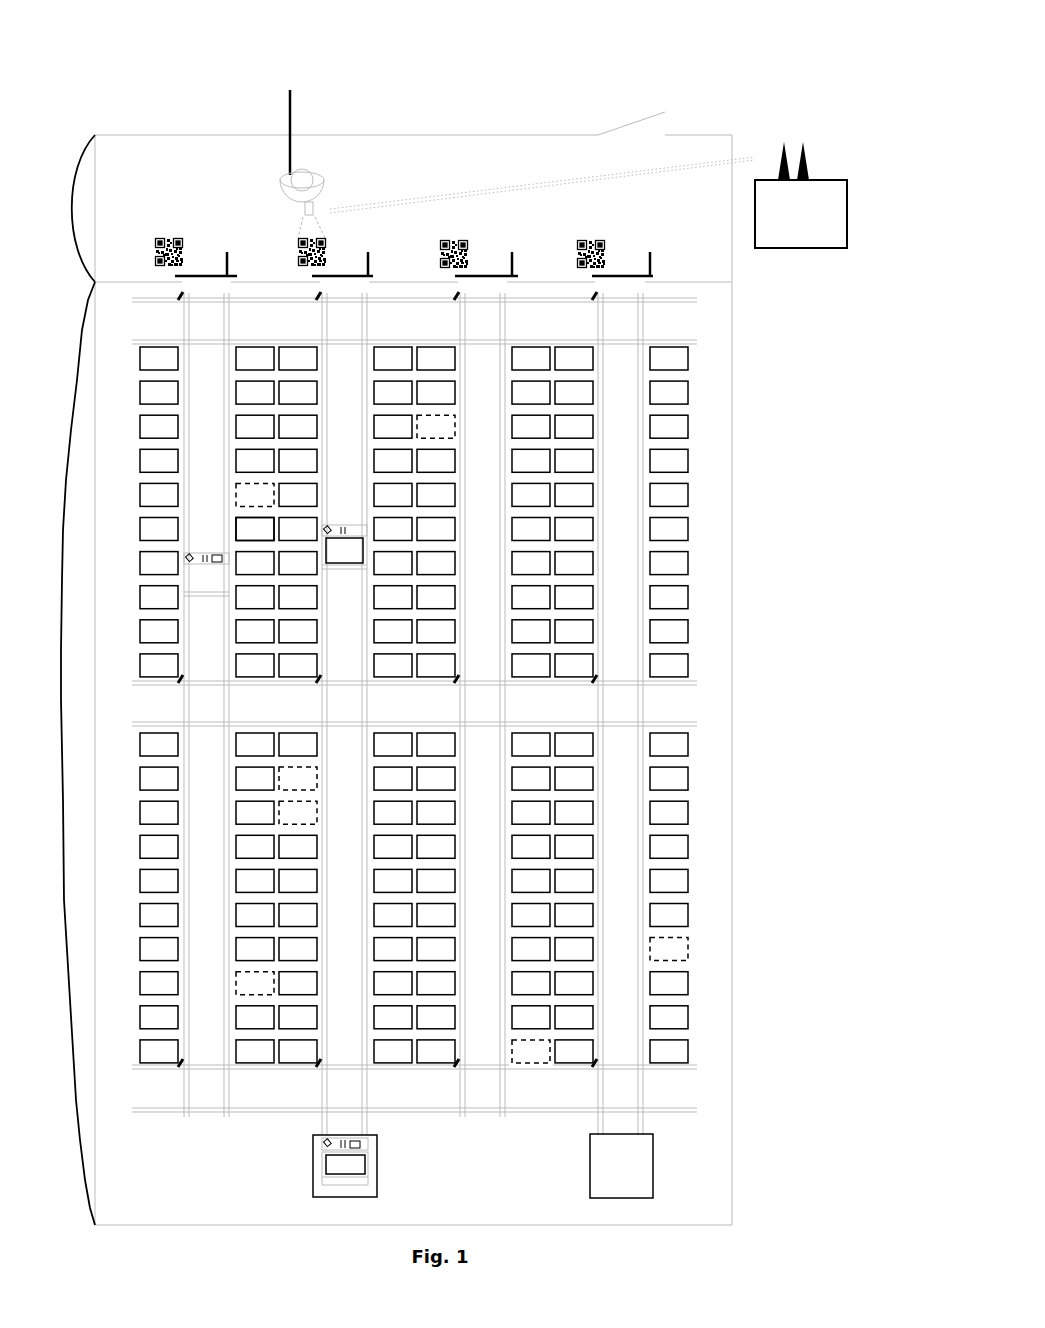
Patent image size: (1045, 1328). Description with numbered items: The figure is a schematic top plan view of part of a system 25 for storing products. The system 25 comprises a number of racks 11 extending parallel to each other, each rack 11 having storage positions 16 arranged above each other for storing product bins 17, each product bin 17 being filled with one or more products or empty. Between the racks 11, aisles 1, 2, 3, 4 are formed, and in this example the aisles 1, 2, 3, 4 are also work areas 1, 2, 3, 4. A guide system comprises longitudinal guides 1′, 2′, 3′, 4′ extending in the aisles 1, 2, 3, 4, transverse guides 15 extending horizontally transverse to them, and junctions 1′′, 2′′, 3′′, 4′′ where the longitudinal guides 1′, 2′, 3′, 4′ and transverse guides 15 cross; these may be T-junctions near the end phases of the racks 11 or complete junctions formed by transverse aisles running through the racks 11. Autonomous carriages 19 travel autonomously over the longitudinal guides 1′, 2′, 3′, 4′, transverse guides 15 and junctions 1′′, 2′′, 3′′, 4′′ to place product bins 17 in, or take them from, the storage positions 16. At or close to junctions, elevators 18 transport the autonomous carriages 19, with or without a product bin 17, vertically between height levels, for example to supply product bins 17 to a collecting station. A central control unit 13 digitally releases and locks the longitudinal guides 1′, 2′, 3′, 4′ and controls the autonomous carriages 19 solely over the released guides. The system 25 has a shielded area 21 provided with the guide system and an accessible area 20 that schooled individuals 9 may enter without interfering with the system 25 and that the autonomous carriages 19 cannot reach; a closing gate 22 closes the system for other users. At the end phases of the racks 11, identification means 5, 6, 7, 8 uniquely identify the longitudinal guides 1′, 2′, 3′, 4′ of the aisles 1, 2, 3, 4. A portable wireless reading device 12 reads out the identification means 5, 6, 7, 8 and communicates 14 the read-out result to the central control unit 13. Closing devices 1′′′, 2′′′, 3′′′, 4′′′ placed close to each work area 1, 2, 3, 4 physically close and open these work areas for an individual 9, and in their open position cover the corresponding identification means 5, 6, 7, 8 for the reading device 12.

The aisle 1 is at (203, 704).
The aisle 2 is at (341, 713).
The aisle 3 is at (479, 704).
The aisle 4 is at (617, 713).
The longitudinal guide 1′ is at (206, 406).
The longitudinal guide 2′ is at (344, 406).
The longitudinal guide 3′ is at (482, 406).
The longitudinal guide 4′ is at (620, 406).
The junction 1′′ is at (212, 323).
The junction 2′′ is at (350, 323).
The junction 3′′ is at (488, 323).
The junction 4′′ is at (626, 323).
The closing device 1′′′ is at (213, 253).
The closing device 2′′′ is at (346, 253).
The closing device 3′′′ is at (496, 253).
The closing device 4′′′ is at (632, 253).
The identification means 5 is at (180, 250).
The identification means 6 is at (322, 250).
The identification means 7 is at (465, 245).
The identification means 8 is at (601, 250).
The individual 9 is at (302, 136).
The rack 11 is at (420, 1117).
The portable wireless reading device 12 is at (305, 212).
The central control unit 13 is at (803, 248).
The communicating 14 is at (547, 185).
The transverse guide 15 is at (404, 705).
The storage position 16 is at (241, 497).
The product bin 17 is at (252, 532).
The elevator 18 is at (353, 1193).
The autonomous carriage 19 is at (205, 583).
The accessible area 20 is at (73, 208).
The shielded area 21 is at (62, 712).
The closing gate 22 is at (623, 127).
The system for storing products 25 is at (738, 52).